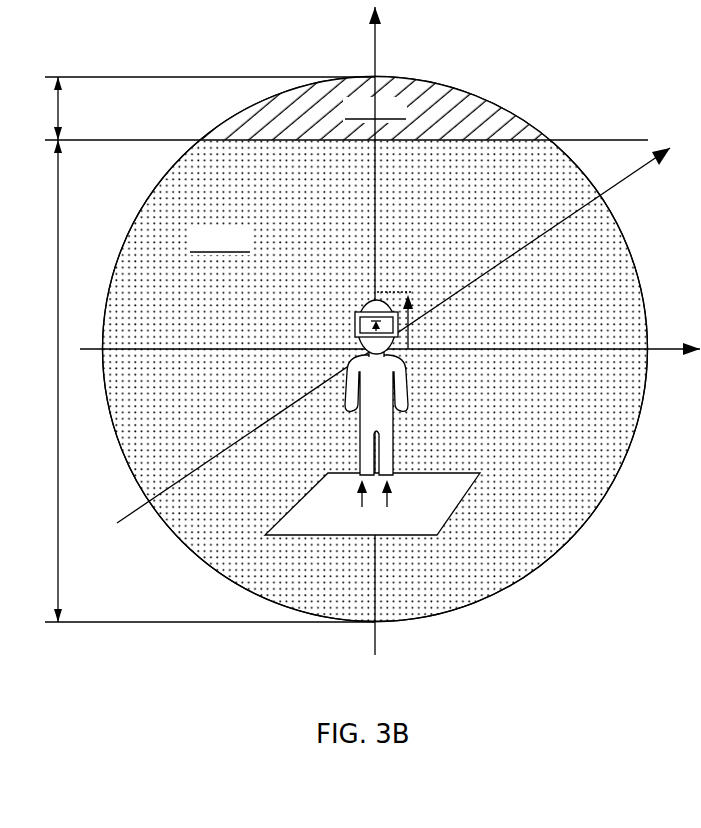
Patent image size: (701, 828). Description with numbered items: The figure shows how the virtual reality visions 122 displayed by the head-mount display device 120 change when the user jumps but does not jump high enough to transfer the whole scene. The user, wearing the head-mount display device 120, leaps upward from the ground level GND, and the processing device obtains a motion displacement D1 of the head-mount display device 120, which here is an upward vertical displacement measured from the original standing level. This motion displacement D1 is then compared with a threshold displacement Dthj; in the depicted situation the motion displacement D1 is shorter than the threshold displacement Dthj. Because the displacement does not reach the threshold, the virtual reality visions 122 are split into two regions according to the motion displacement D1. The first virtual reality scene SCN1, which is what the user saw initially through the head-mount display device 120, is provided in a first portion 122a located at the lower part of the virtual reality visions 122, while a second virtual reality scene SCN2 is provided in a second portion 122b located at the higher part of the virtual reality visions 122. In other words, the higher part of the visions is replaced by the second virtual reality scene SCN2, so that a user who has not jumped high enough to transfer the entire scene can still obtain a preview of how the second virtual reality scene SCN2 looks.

The head-mount display device 120 is at (345, 310).
The virtual reality visions 122 is at (503, 107).
The first portion 122a is at (189, 381).
The second portion 122b is at (189, 108).
The motion displacement D1 is at (358, 340).
The threshold displacement Dthj is at (409, 329).
The ground level GND is at (470, 490).
The first virtual reality scene SCN1 is at (220, 241).
The second virtual reality scene SCN2 is at (375, 110).